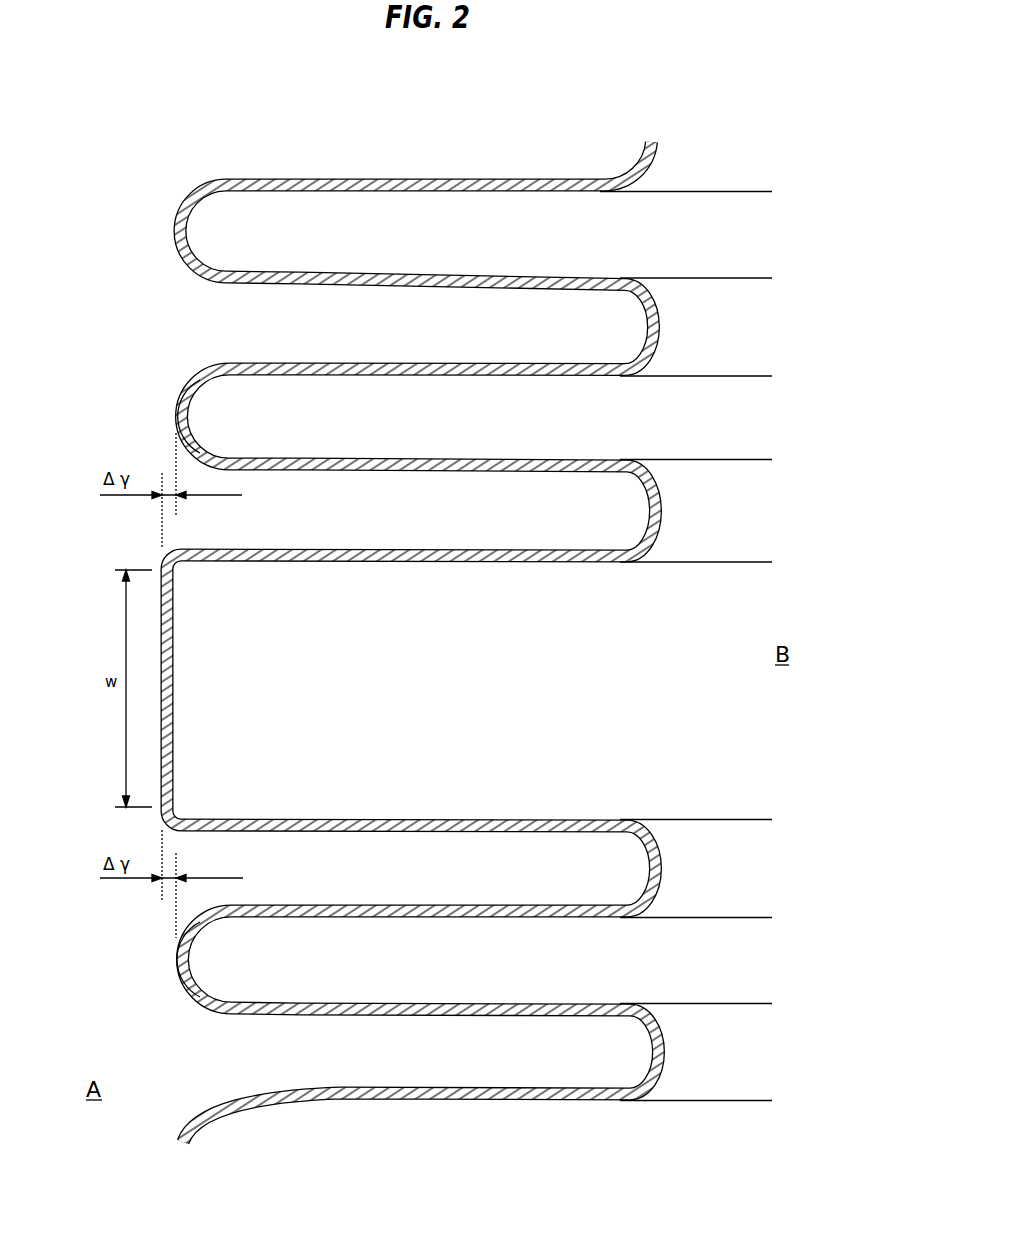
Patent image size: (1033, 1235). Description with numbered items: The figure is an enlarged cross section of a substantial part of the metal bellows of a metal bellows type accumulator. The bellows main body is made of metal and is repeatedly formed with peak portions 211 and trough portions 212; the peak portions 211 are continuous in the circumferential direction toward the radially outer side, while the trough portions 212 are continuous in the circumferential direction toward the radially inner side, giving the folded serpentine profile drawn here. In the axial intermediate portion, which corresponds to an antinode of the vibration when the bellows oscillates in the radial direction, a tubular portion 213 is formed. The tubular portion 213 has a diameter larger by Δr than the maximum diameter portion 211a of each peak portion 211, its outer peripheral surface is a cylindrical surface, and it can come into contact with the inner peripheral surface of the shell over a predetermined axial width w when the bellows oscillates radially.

The peak portion 211 is at (193, 382).
The maximum diameter portion 211a is at (175, 417).
The trough portion 212 is at (658, 303).
The tubular portion 213 is at (172, 620).